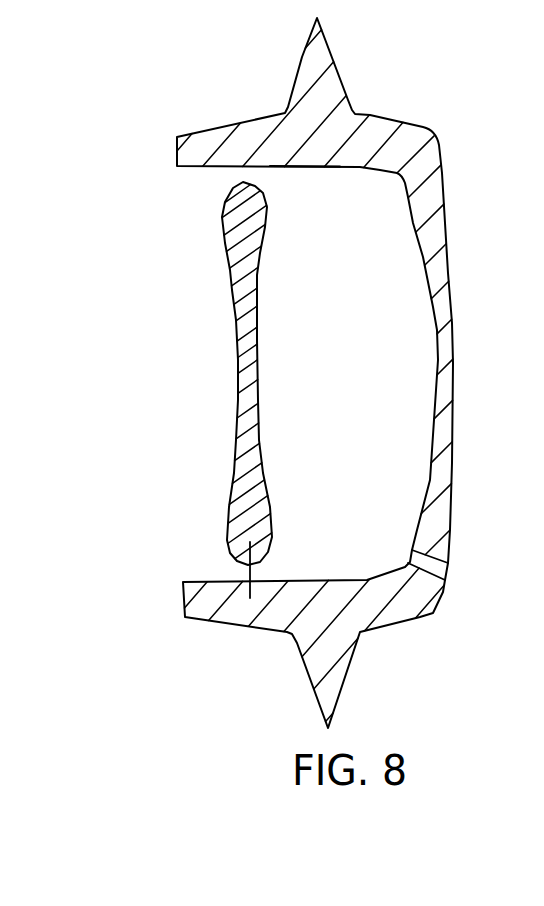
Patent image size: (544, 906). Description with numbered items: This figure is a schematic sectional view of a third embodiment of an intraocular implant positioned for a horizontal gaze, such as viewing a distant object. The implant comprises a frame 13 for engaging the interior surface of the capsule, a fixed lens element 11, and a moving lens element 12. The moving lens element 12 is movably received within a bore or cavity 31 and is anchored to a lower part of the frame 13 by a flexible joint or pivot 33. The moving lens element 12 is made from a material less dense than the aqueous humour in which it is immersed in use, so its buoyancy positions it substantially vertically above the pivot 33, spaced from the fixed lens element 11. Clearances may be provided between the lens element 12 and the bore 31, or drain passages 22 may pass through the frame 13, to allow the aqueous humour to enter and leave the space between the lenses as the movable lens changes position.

The fixed lens element 11 is at (448, 372).
The moving lens element 12 is at (232, 258).
The frame 13 is at (327, 62).
The drain passage 22 is at (442, 575).
The bore 31 is at (300, 168).
The flexible joint 33 is at (248, 575).